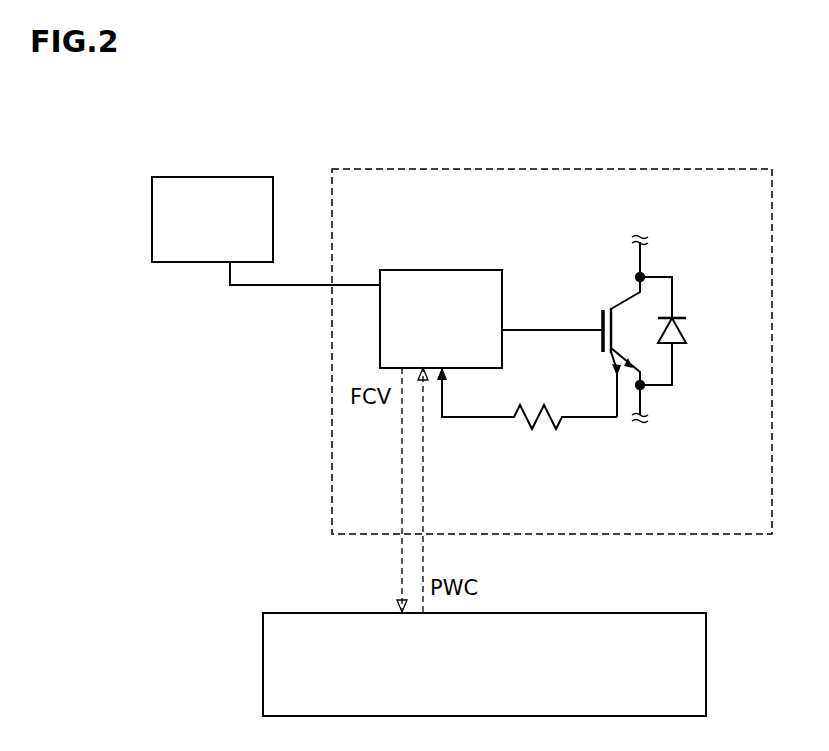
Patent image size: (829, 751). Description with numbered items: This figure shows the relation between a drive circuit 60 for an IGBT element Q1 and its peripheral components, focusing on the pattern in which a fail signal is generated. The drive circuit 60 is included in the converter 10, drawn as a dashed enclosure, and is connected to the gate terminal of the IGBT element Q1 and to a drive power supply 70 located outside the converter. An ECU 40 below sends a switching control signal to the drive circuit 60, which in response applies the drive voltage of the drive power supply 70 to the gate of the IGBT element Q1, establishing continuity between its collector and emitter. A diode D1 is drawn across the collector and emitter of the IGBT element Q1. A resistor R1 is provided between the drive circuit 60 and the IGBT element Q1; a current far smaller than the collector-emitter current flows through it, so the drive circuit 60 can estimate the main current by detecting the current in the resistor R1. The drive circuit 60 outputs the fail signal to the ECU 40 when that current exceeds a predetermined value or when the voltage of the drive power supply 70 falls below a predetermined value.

The converter 10 is at (550, 168).
The drive power supply 70 is at (228, 176).
The drive circuit 60 is at (473, 270).
The ECU 40 is at (292, 612).
The IGBT element Q1 is at (603, 322).
The diode D1 is at (680, 342).
The resistor R1 is at (556, 421).